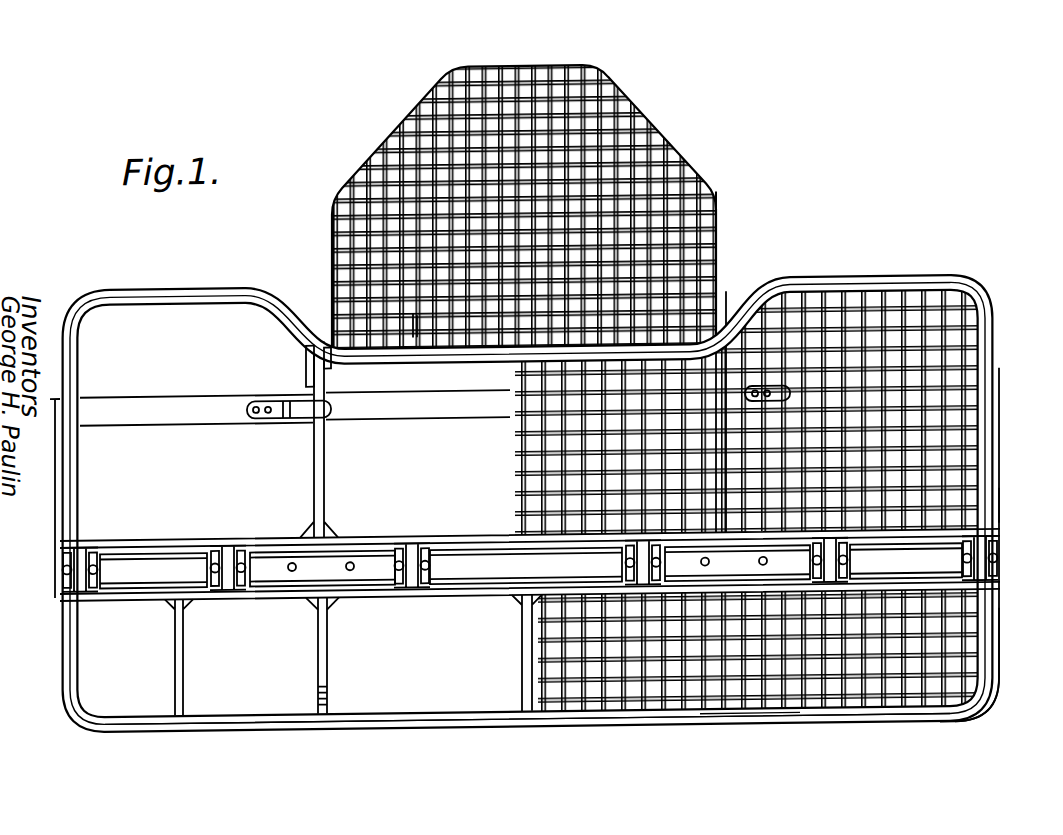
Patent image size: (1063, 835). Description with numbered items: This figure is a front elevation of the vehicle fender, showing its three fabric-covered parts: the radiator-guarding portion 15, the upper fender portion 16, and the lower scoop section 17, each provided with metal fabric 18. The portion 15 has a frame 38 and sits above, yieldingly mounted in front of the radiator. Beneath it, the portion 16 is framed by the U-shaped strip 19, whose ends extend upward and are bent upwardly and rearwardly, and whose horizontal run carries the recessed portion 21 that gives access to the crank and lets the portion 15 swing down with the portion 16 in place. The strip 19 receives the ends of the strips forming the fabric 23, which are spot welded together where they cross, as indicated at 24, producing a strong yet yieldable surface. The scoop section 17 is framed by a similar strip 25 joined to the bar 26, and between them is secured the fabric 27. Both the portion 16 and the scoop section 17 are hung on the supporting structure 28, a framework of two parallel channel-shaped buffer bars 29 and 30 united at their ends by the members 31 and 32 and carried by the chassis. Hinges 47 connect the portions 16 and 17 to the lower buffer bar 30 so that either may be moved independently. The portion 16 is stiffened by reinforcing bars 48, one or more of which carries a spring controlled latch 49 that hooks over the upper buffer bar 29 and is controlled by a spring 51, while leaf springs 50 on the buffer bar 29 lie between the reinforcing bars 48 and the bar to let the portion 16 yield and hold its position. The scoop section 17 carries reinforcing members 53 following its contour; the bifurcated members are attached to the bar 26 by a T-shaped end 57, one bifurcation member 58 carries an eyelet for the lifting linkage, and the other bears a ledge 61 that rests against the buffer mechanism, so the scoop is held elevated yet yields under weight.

The portion 15 is at (697, 191).
The portion 16 is at (993, 372).
The scoop section 17 is at (1000, 657).
The metal fabric 18 is at (722, 262).
The strip 19 is at (200, 291).
The recessed portion 21 is at (296, 296).
The fabric 23 is at (960, 472).
The spot weld 24 is at (410, 323).
The strip 25 is at (410, 727).
The bar 26 is at (63, 554).
The fabric 27 is at (713, 695).
The supporting structure 28 is at (436, 521).
The buffer bar 29 is at (183, 392).
The buffer bar 30 is at (160, 569).
The member 31 is at (55, 516).
The member 32 is at (997, 526).
The frame 38 is at (385, 155).
The hinge 47 is at (227, 560).
The reinforcing bar 48 is at (325, 503).
The spring controlled latch 49 is at (310, 368).
The leaf spring 50 is at (283, 421).
The spring 51 is at (740, 706).
The reinforcing member 53 is at (527, 659).
The T-shaped end 57 is at (313, 720).
The bifurcation member 58 is at (308, 620).
The ledge 61 is at (333, 613).